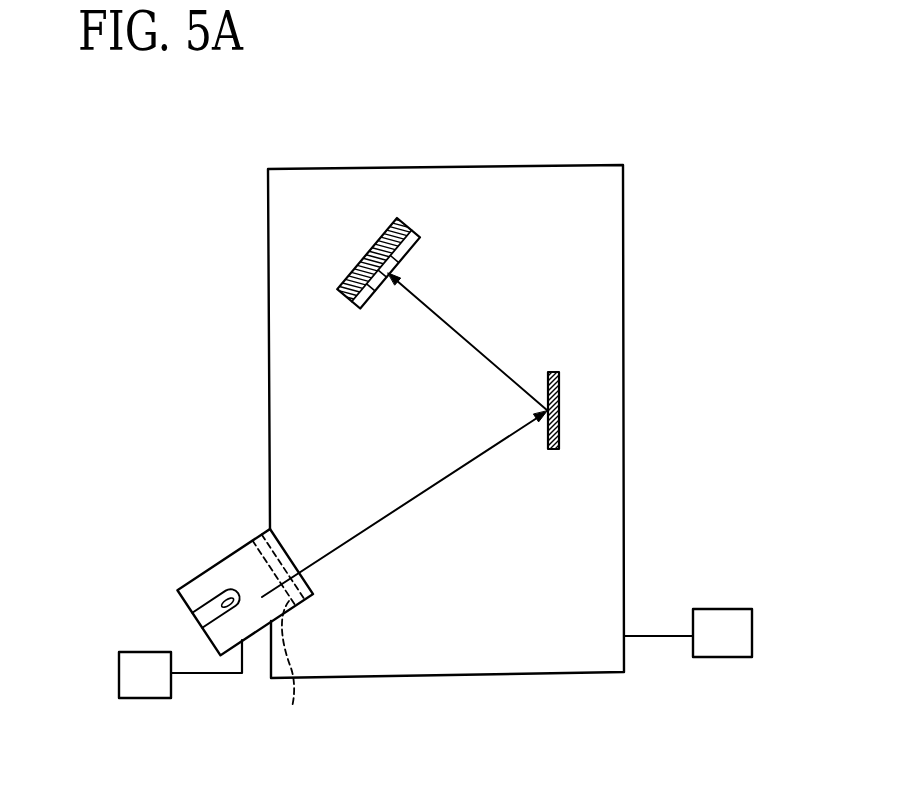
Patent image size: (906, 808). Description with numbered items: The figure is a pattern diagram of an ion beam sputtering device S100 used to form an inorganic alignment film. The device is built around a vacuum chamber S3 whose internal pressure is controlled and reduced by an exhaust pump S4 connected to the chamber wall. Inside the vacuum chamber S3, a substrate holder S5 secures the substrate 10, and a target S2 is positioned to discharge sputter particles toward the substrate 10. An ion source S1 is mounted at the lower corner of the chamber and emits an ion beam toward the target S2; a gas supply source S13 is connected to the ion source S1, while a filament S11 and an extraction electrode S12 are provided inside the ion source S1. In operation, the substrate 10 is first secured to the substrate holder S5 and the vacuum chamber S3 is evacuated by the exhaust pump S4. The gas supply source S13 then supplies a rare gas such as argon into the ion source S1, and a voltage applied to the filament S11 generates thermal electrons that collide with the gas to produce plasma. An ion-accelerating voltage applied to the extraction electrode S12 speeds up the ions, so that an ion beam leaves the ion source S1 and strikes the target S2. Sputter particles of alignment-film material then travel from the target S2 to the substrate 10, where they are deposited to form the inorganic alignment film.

The ion beam sputtering device S100 is at (609, 136).
The vacuum chamber S3 is at (624, 197).
The substrate 10 is at (421, 240).
The substrate holder S5 is at (340, 289).
The target S2 is at (559, 410).
The ion source S1 is at (240, 549).
The filament S11 is at (207, 600).
The extraction electrode S12 is at (284, 640).
The gas supply source S13 is at (147, 690).
The exhaust pump S4 is at (722, 617).